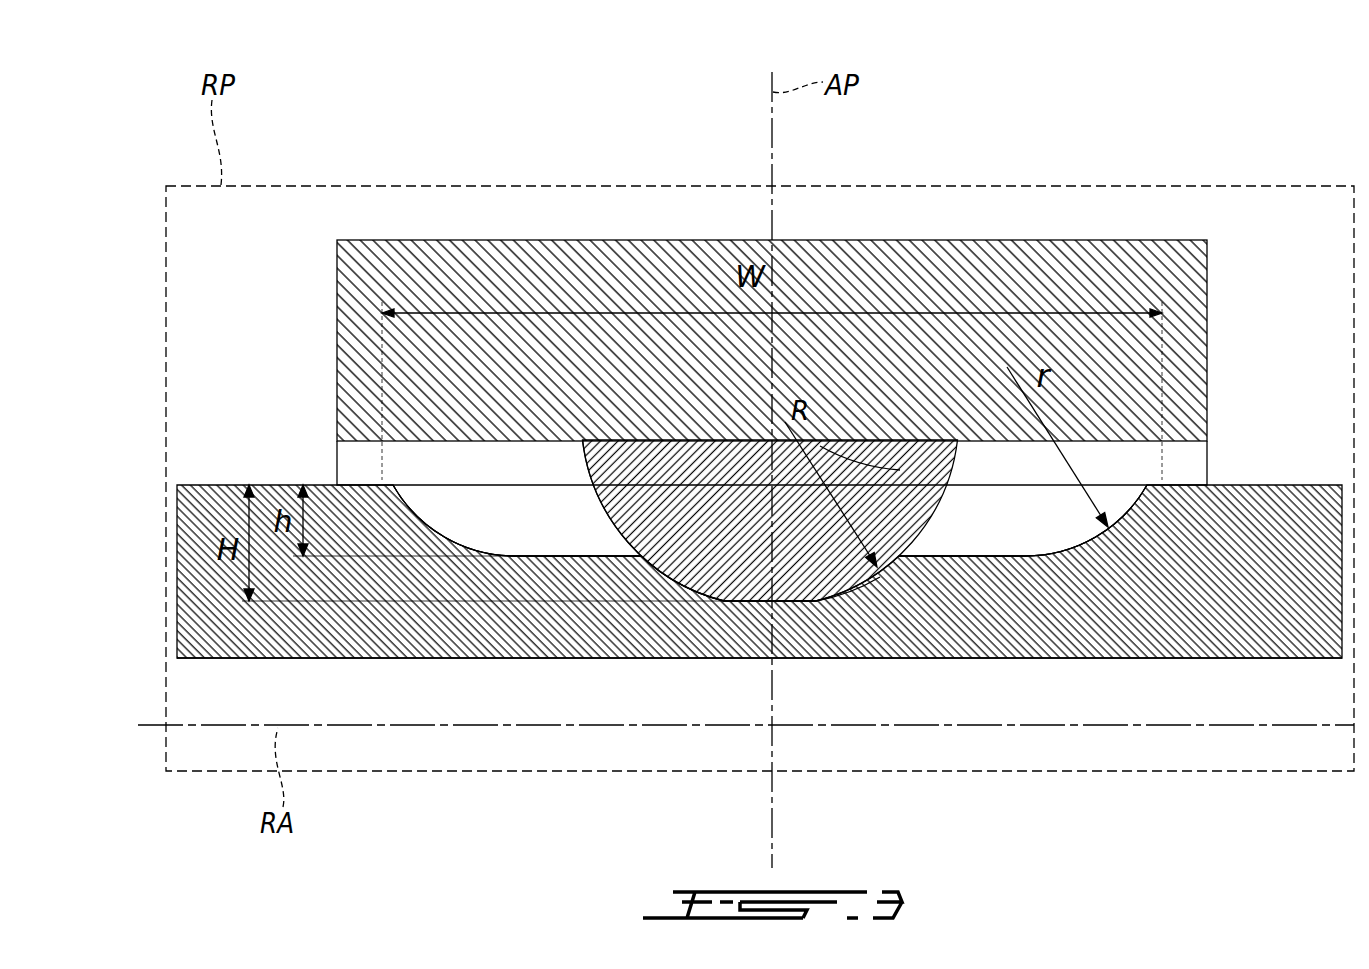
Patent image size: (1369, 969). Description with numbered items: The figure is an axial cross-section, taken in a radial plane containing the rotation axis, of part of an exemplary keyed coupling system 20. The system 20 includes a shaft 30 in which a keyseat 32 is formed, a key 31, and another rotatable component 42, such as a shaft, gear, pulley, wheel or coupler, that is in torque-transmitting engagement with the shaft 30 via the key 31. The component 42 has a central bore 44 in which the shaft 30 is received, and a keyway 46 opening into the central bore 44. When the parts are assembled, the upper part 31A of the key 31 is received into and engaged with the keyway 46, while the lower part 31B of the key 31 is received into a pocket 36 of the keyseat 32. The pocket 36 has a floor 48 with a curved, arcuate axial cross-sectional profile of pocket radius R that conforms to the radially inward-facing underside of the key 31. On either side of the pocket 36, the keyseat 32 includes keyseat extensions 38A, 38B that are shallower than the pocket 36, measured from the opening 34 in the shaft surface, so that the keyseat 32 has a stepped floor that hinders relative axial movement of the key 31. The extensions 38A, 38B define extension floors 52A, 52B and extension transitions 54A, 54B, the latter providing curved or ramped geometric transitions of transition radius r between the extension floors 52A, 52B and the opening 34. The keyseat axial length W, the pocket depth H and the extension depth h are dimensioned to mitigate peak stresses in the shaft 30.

The system 20 is at (1152, 158).
The shaft 30 is at (1173, 623).
The key 31 is at (675, 542).
The upper part of key 31A is at (866, 455).
The lower part of key 31B is at (797, 573).
The keyseat 32 is at (537, 455).
The opening 34 is at (1096, 530).
The pocket 36 is at (848, 608).
The keyseat extension 38A is at (500, 520).
The keyseat extension 38B is at (998, 520).
The rotatable component 42 is at (663, 275).
The central bore 44 is at (1213, 510).
The keyway 46 is at (359, 457).
The floor of pocket 48 is at (700, 590).
The extension floor 52A is at (585, 556).
The extension floor 52B is at (943, 557).
The extension transition 54A is at (427, 525).
The extension transition 54B is at (1093, 536).